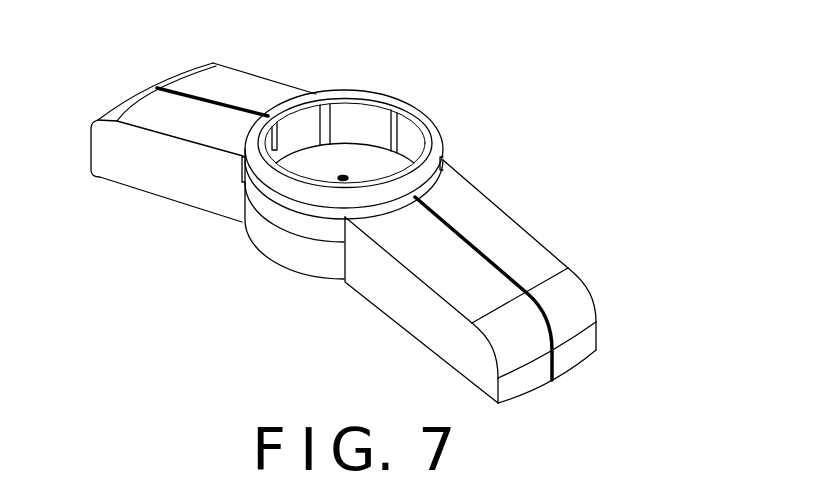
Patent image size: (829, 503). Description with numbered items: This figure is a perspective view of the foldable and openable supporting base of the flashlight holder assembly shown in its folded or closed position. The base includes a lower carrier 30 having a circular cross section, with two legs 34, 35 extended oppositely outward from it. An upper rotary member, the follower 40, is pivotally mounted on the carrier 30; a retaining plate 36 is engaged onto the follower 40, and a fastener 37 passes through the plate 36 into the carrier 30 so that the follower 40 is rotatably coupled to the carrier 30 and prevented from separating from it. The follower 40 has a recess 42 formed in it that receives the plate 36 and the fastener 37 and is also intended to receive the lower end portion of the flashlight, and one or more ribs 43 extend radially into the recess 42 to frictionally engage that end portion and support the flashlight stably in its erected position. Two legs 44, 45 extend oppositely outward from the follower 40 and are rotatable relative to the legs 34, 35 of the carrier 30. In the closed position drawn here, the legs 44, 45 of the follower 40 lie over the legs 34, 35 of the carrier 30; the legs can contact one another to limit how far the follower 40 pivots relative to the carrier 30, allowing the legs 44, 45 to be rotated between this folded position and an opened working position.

The carrier 30 is at (307, 258).
The leg 34 is at (138, 172).
The leg 35 is at (535, 262).
The plate 36 is at (313, 153).
The fastener 37 is at (343, 176).
The follower 40 is at (390, 102).
The recess 42 is at (368, 111).
The rib 43 is at (393, 135).
The leg 44 is at (205, 76).
The leg 45 is at (517, 362).